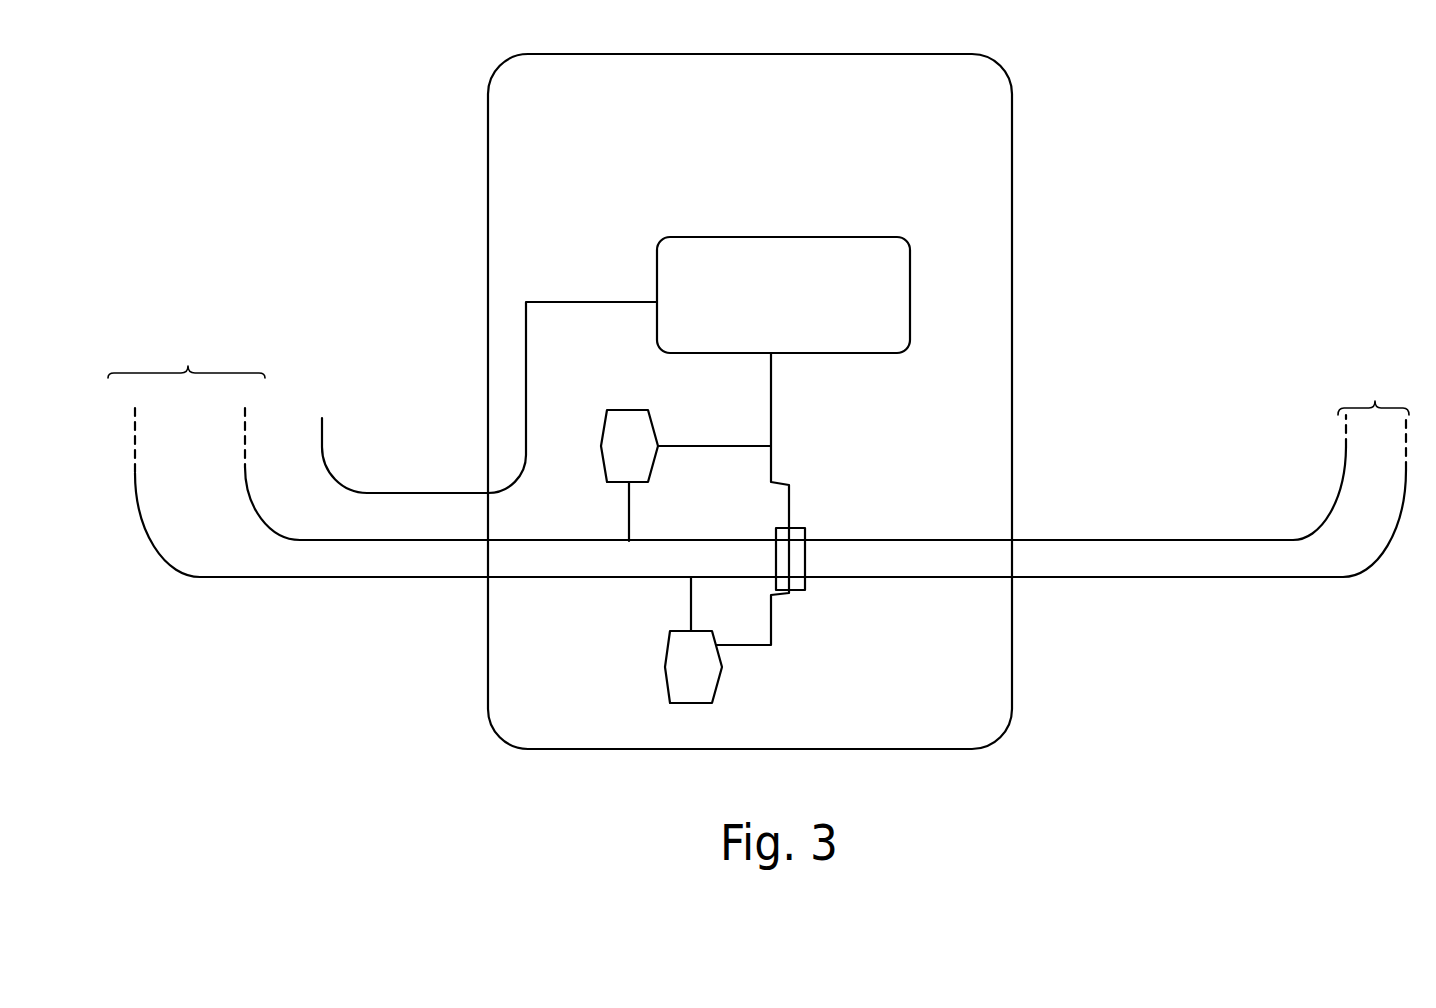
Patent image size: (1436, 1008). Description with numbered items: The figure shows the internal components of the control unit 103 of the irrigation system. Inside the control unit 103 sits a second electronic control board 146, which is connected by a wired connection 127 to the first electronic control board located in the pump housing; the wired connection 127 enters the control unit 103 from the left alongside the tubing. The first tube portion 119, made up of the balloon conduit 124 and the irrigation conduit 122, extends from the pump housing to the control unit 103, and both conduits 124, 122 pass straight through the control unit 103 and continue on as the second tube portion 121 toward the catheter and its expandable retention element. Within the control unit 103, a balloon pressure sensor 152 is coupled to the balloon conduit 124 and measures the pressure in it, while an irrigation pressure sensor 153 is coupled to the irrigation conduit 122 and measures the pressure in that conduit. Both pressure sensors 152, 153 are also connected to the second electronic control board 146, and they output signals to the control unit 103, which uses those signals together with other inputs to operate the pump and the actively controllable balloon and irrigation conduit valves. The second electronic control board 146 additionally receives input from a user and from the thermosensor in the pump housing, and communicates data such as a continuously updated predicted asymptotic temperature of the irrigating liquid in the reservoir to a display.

The control unit 103 is at (1012, 190).
The second electronic control board 146 is at (783, 382).
The balloon pressure sensor 152 is at (686, 475).
The irrigation pressure sensor 153 is at (727, 640).
The first tube portion 119 is at (186, 354).
The irrigation conduit 122 is at (760, 478).
The balloon conduit 124 is at (785, 460).
The wired connection 127 is at (479, 397).
The second tube portion 121 is at (1373, 392).